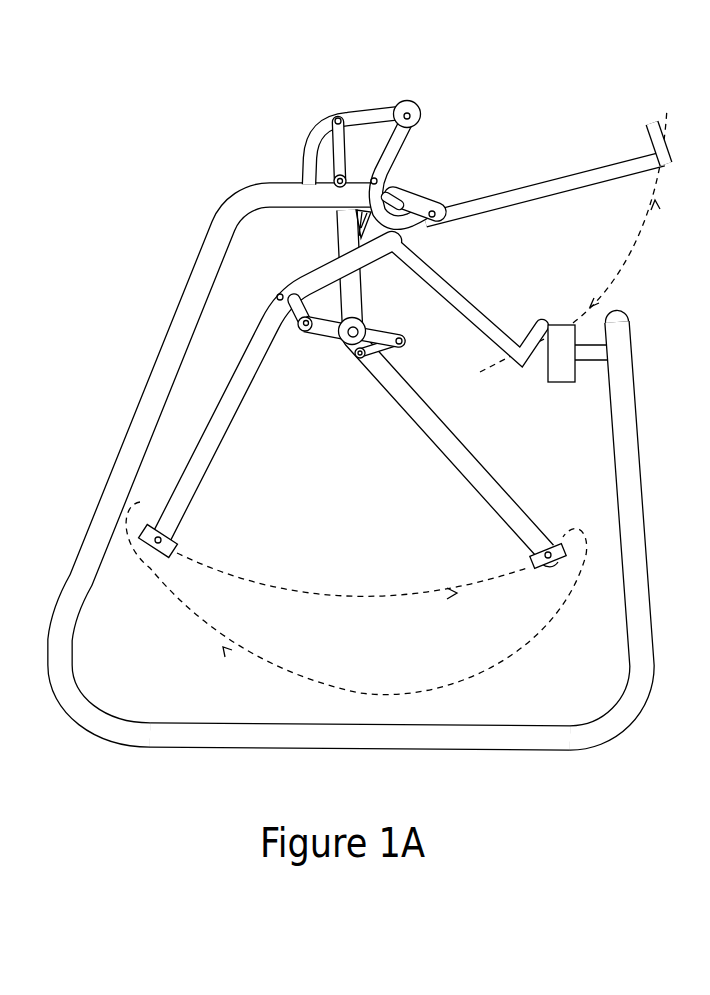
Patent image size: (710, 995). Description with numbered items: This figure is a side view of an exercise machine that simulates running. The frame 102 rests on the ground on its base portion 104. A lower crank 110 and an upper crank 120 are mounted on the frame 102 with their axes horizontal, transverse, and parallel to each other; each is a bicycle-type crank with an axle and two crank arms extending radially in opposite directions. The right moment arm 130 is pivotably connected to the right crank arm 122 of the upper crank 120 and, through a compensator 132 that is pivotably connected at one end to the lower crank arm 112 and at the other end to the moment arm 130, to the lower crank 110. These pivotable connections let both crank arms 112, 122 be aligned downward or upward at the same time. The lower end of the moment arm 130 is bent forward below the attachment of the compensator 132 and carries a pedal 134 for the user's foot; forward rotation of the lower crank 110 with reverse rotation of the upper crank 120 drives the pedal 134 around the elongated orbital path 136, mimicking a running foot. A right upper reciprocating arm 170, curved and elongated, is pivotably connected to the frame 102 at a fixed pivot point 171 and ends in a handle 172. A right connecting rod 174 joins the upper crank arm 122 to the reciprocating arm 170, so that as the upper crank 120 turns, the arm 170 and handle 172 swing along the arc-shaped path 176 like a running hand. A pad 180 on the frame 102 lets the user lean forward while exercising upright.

The frame 102 is at (102, 523).
The base portion 104 is at (463, 740).
The lower crank 110 is at (353, 340).
The right crank arm (of lower crank) 112 is at (328, 334).
The upper crank 120 is at (392, 196).
The right crank arm (of upper crank) 122 is at (410, 200).
The right moment arm 130 is at (435, 444).
The compensator 132 is at (292, 317).
The pedal 134 is at (530, 558).
The elongated orbital path 136 is at (397, 600).
The right upper reciprocating arm 170 is at (528, 200).
The fixed pivot point 171 is at (407, 113).
The handle 172 is at (656, 140).
The right connecting rod 174 is at (338, 147).
The arc-shaped path 176 is at (630, 253).
The pad 180 is at (558, 362).